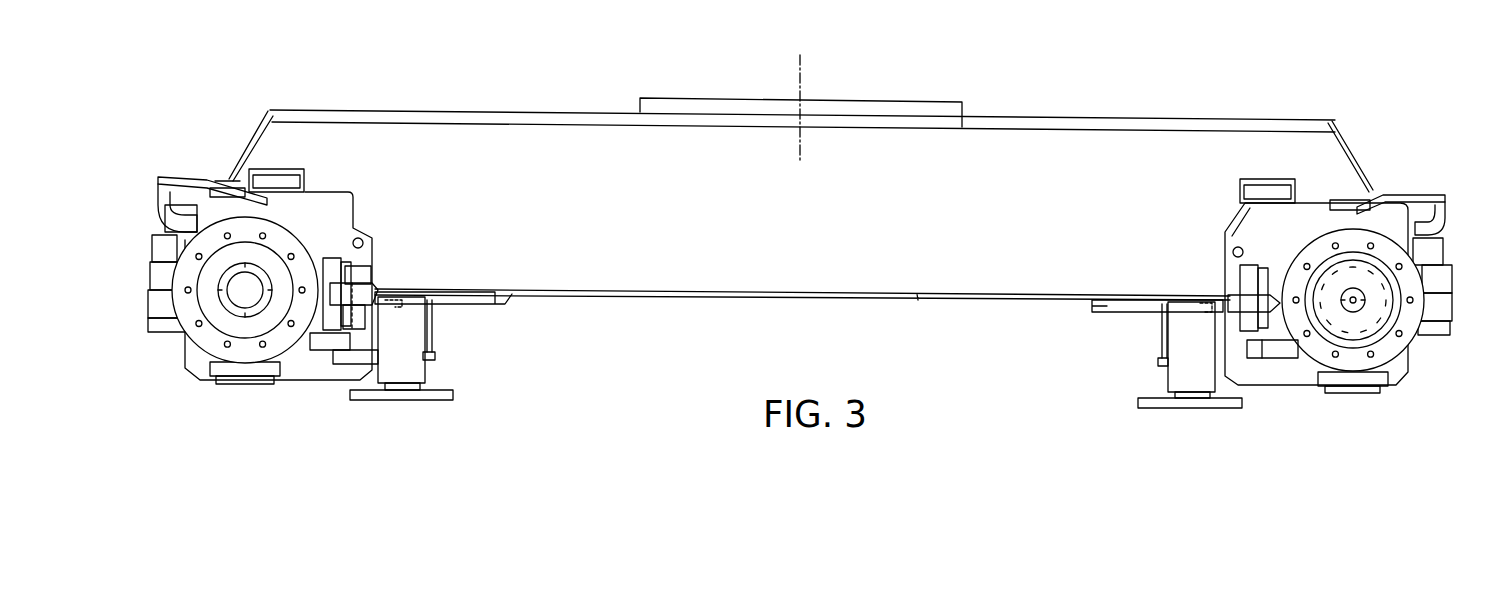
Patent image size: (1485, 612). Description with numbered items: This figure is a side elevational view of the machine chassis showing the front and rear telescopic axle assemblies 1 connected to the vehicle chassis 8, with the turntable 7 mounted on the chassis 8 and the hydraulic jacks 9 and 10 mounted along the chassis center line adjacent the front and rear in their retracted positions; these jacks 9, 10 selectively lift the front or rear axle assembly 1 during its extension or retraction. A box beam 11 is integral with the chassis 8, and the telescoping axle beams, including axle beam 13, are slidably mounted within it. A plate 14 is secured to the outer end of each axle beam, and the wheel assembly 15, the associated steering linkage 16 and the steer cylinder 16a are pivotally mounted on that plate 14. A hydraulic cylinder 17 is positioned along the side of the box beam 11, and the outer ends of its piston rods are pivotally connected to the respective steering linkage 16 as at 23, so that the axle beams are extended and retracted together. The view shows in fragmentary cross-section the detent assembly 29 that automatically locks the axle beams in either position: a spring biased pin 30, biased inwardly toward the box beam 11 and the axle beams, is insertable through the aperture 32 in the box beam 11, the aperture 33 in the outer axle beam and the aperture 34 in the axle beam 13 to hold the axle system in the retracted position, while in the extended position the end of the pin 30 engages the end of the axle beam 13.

The telescopic axle assembly 1 is at (335, 184).
The turntable 7 is at (668, 105).
The vehicle chassis 8 is at (983, 129).
The hydraulic jack 9 is at (1183, 330).
The hydraulic jack 10 is at (418, 334).
The box beam 11 is at (362, 317).
The axle beam 13 is at (343, 250).
The plate 14 is at (332, 226).
The wheel assembly 15 is at (183, 354).
The steering linkage 16 is at (212, 200).
The steer cylinder 16a is at (152, 204).
The hydraulic cylinder 17 is at (150, 305).
The pivotal connection 23 is at (167, 338).
The detent assembly 29 is at (378, 288).
The spring biased pin 30 is at (363, 270).
The aperture 32 is at (348, 350).
The aperture 33 is at (337, 267).
The aperture 34 is at (320, 335).